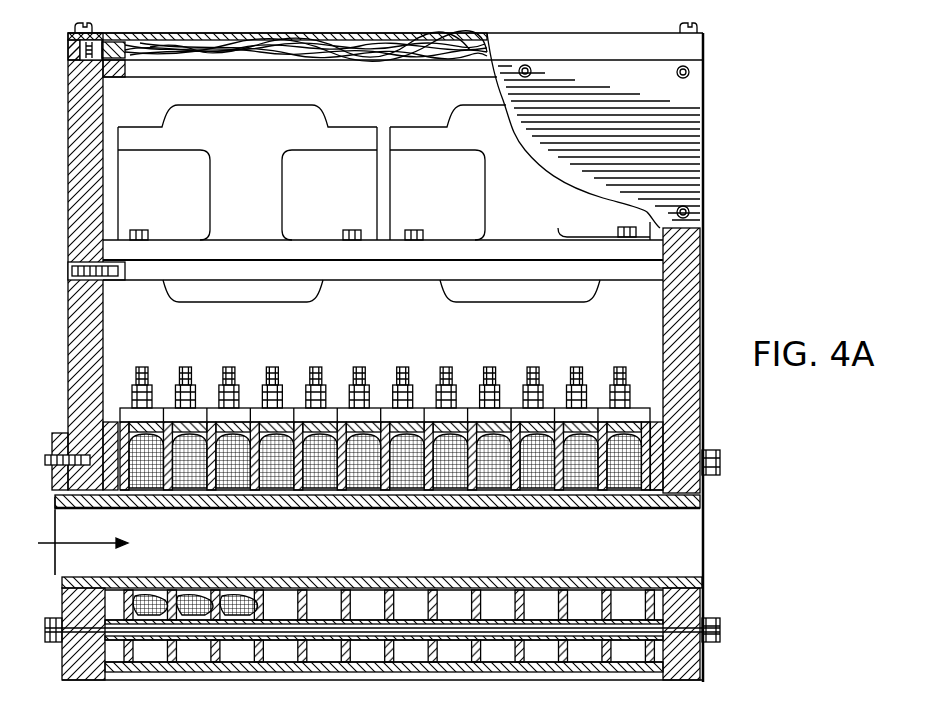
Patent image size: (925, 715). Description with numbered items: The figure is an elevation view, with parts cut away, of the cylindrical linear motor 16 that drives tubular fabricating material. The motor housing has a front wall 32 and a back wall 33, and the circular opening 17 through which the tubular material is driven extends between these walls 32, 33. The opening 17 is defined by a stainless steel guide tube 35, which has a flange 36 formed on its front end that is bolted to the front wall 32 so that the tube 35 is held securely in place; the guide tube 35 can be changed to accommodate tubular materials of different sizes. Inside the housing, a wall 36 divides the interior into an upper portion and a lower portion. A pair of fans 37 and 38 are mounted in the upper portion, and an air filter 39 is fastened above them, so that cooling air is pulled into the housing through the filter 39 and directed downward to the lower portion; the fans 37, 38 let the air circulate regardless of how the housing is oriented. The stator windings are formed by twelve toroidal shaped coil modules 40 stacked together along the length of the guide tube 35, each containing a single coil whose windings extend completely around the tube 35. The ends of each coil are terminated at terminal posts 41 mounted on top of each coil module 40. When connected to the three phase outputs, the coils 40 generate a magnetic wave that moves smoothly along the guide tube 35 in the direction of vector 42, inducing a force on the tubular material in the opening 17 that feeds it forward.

The cylindrical linear motor 16 is at (62, 122).
The circular opening 17 is at (40, 536).
The front wall 32 is at (60, 368).
The back wall 33 is at (703, 272).
The guide tube 35 is at (78, 576).
The wall 36 is at (127, 285).
The fan 37 is at (262, 204).
The fan 38 is at (533, 204).
The air filter 39 is at (307, 45).
The toroidal shaped coil module 40 is at (375, 440).
The terminal post 41 is at (148, 372).
The vector 42 is at (90, 548).